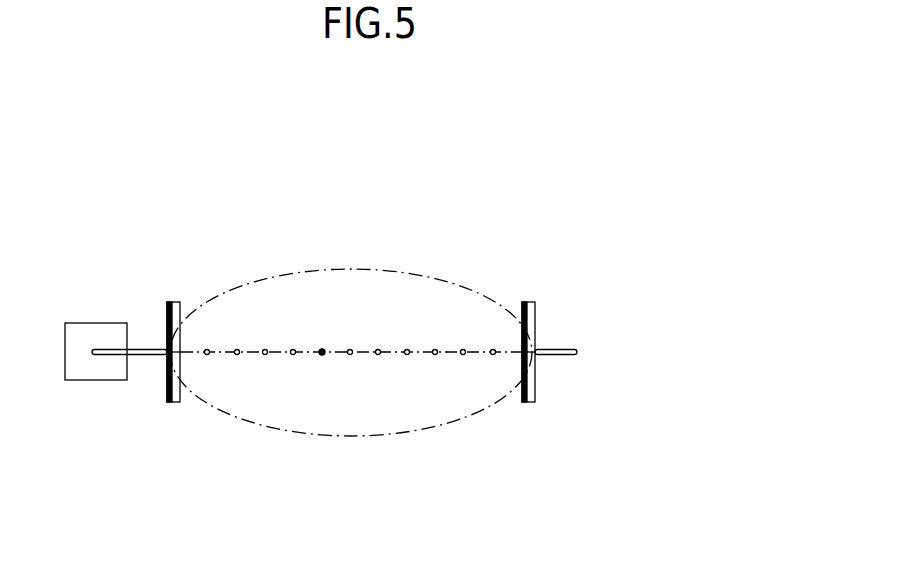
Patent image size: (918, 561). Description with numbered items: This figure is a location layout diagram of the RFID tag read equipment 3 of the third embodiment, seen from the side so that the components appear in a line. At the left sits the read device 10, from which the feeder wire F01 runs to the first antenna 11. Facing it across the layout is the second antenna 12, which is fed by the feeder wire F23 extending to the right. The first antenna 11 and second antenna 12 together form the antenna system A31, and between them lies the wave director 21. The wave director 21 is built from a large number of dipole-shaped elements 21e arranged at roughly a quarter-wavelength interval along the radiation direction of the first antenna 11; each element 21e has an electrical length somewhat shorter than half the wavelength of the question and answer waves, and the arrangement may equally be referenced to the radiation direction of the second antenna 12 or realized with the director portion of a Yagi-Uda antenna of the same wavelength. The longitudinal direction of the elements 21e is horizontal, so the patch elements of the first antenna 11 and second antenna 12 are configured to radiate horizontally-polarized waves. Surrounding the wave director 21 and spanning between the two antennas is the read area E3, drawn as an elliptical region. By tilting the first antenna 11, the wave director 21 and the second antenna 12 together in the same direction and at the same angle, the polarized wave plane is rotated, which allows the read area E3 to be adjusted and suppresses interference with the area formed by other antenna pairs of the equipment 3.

The RFID tag read equipment 3 is at (70, 113).
The antenna system A31 is at (565, 118).
The first antenna 11 is at (172, 302).
The second antenna 12 is at (528, 302).
The wave director 21 is at (503, 258).
The dipole-shaped elements 21e is at (350, 355).
The read device 10 is at (100, 337).
The feeder wire F01 is at (150, 357).
The feeder wire F23 is at (572, 356).
The read area E3 is at (276, 433).